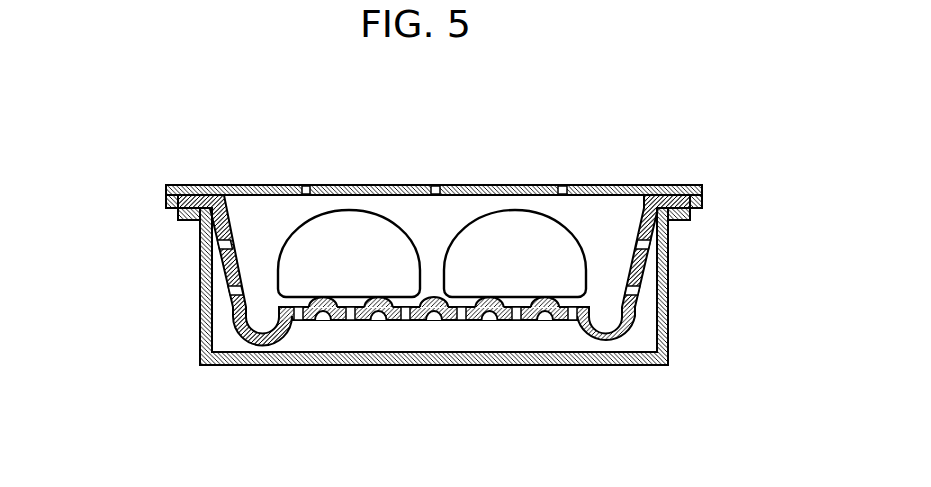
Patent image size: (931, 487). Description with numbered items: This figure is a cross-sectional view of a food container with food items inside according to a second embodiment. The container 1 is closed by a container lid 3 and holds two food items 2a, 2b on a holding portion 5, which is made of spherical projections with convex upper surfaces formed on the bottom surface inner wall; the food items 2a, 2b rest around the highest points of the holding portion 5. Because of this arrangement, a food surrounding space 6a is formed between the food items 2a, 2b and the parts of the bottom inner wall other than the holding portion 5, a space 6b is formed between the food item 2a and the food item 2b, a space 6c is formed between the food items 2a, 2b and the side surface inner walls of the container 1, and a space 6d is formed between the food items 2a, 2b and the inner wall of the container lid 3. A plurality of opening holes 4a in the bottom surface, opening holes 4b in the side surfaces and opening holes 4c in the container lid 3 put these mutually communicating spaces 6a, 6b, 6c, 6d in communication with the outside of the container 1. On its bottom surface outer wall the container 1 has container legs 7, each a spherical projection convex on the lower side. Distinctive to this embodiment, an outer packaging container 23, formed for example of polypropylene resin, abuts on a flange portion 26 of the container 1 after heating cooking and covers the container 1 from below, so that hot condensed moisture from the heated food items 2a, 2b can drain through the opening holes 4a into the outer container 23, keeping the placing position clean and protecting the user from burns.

The container 1 is at (148, 170).
The food item 2a is at (347, 237).
The food item 2b is at (513, 237).
The container lid 3 is at (455, 185).
The opening holes 4a is at (366, 283).
The opening holes 4b is at (218, 245).
The opening holes 4c is at (560, 185).
The holding portion 5 is at (352, 320).
The food surrounding space 6a is at (523, 298).
The food surrounding space 6b is at (433, 272).
The food surrounding space 6c is at (258, 270).
The food surrounding space 6d is at (320, 207).
The container legs 7 is at (258, 342).
The outer packaging container 23 is at (450, 367).
The flange portion 26 is at (457, 150).